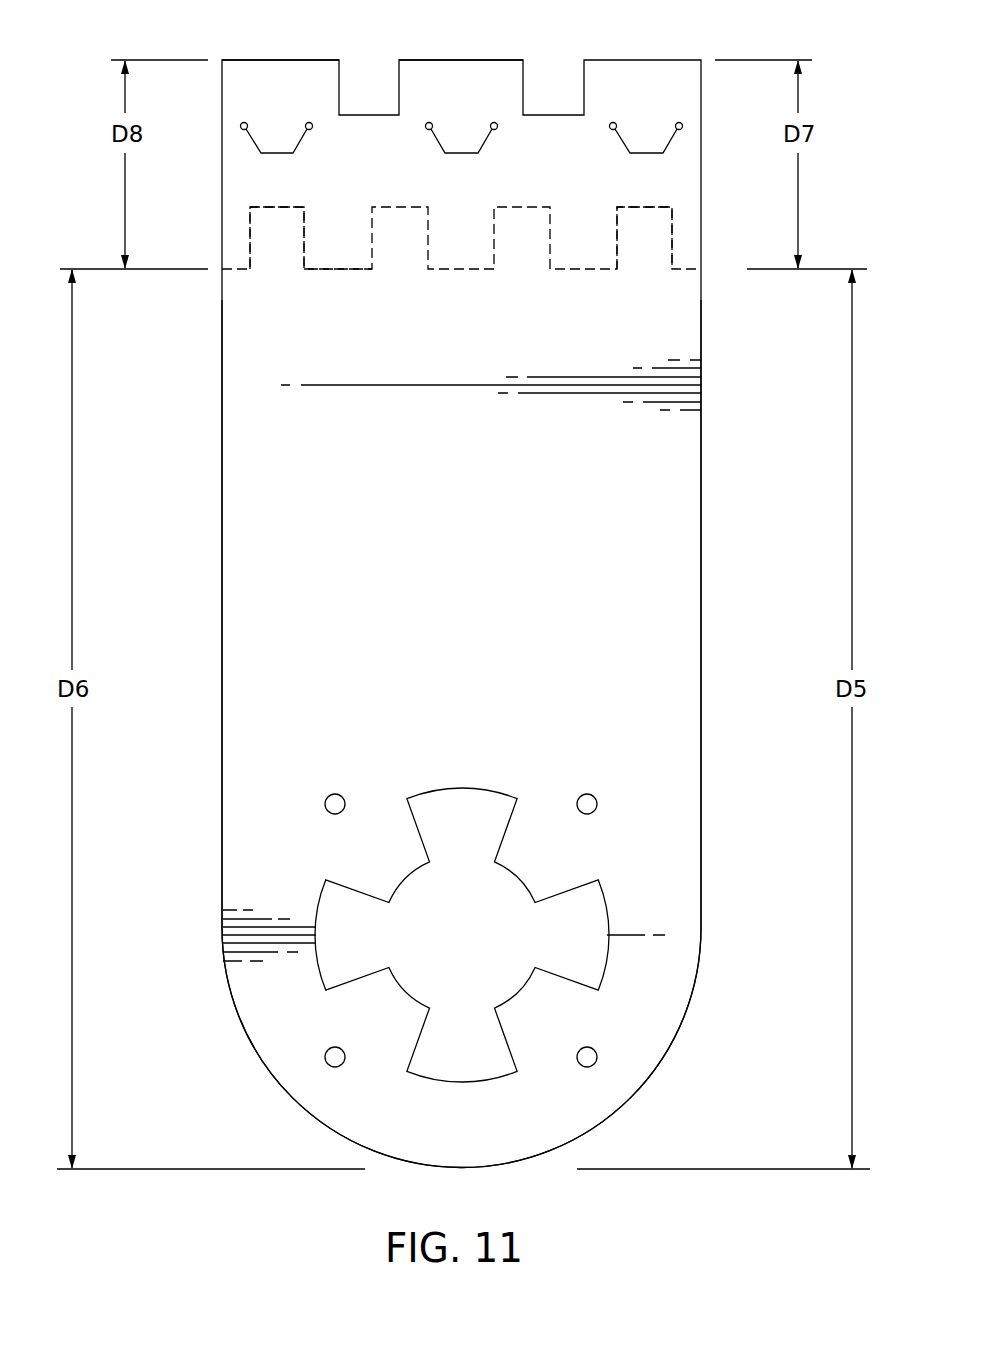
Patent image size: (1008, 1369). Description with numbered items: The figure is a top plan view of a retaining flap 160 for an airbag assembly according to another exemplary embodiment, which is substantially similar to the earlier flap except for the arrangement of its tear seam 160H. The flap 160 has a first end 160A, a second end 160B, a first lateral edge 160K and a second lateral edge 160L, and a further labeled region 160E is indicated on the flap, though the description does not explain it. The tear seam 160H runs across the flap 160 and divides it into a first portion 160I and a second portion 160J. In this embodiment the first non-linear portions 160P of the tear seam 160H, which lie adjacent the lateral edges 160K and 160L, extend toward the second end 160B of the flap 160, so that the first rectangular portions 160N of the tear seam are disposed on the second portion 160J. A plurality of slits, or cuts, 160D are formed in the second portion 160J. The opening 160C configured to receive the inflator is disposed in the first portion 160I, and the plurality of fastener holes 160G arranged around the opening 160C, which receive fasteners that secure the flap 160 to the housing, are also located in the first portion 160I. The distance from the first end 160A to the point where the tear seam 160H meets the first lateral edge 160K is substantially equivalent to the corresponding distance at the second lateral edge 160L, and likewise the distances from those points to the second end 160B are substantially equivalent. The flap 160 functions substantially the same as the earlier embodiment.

The retaining flap 160 is at (209, 605).
The first end 160A is at (537, 1158).
The second end 160B is at (468, 60).
The opening 160C is at (520, 880).
The slits 160D is at (273, 155).
The plate surface 160E is at (615, 527).
The fastener holes 160G is at (328, 796).
The tear seam 160H is at (348, 270).
The first portion 160I is at (300, 468).
The second portion 160J is at (280, 85).
The first lateral edge 160K is at (701, 652).
The second lateral edge 160L is at (222, 730).
The first rectangular portions 160N is at (687, 222).
The first non-linear portion 160P is at (250, 229).